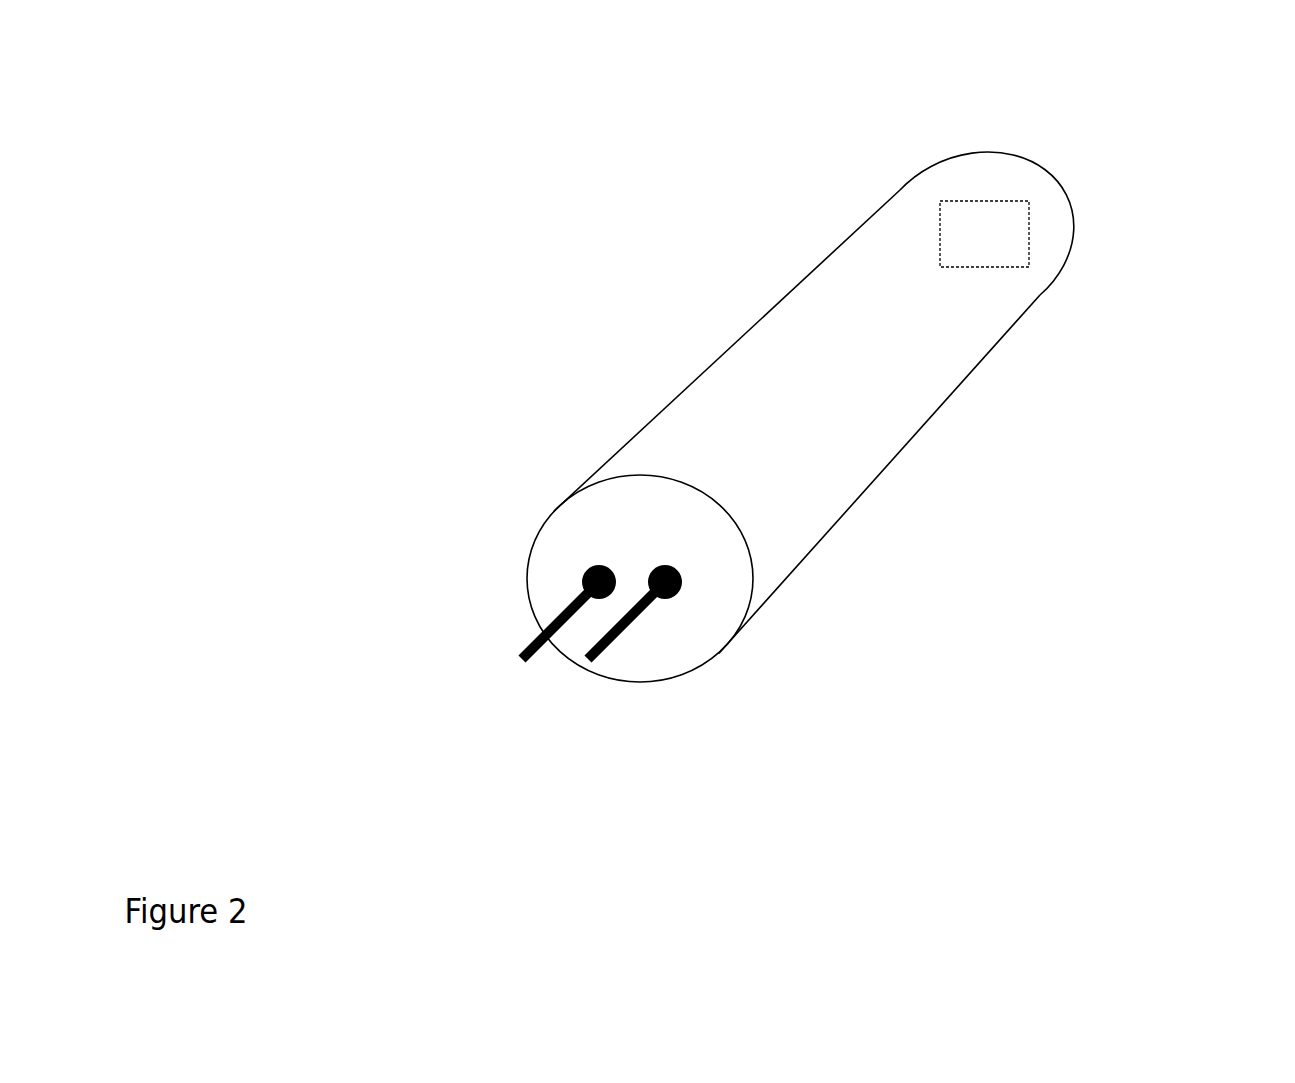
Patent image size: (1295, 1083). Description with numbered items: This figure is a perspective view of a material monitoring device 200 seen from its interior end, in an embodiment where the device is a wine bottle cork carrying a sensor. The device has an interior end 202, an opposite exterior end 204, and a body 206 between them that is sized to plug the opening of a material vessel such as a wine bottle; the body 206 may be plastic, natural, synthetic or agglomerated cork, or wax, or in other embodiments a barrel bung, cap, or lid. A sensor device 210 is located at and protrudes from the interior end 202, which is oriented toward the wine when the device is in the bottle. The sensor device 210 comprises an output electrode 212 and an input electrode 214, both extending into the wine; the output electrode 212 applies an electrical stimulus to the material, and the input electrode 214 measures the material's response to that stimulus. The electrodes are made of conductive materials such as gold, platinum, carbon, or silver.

The material monitoring device 200 is at (360, 137).
The interior end 202 is at (527, 566).
The exterior end 204 is at (1050, 183).
The body 206 is at (688, 382).
The sensor device 210 is at (575, 689).
The output electrode 212 is at (562, 606).
The input electrode 214 is at (650, 607).